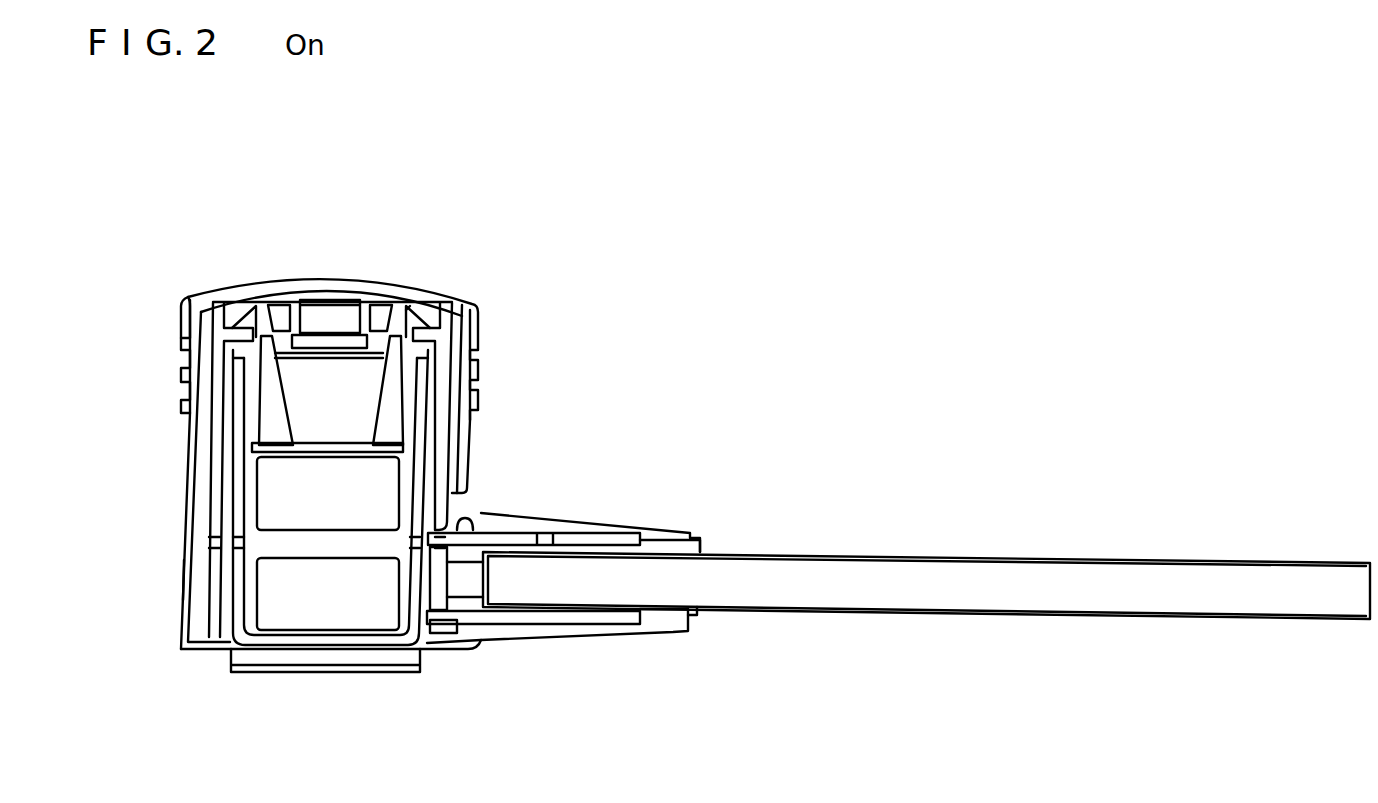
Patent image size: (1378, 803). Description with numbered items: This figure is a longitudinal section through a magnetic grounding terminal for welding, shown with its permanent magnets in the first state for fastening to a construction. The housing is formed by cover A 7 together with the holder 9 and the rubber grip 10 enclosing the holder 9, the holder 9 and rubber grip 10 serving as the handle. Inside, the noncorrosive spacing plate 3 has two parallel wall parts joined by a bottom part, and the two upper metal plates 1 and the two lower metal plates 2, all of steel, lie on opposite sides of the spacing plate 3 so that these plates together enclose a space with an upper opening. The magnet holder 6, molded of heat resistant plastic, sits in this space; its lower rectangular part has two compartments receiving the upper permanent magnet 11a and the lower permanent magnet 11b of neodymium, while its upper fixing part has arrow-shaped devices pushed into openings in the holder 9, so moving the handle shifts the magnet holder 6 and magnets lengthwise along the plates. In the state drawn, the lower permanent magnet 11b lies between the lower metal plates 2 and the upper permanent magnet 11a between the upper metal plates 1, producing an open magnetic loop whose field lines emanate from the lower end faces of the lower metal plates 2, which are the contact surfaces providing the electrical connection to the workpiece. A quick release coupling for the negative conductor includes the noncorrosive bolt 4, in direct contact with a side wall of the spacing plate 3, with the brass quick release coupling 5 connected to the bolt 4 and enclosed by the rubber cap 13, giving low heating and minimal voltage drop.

The upper metal plates 1 is at (237, 483).
The lower metal plates 2 is at (231, 668).
The spacing plate 3 is at (232, 418).
The noncorrosive bolt 4 is at (457, 582).
The upper housing half 5 is at (588, 617).
The magnet holder 6 is at (408, 316).
The cover A 7 is at (181, 567).
The holder 9 is at (208, 354).
The rubber grip 10 is at (183, 305).
The upper permanent magnet 11a is at (380, 488).
The lower permanent magnet 11b is at (372, 600).
The rubber cap 13 is at (680, 628).